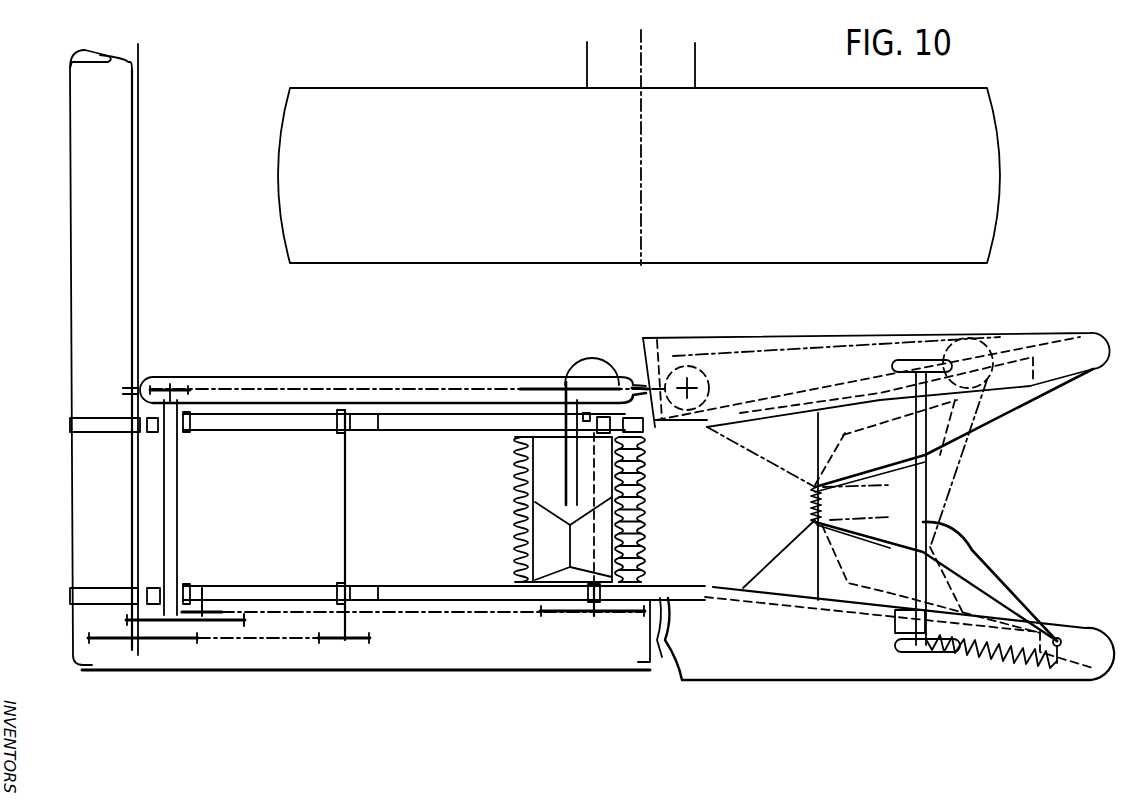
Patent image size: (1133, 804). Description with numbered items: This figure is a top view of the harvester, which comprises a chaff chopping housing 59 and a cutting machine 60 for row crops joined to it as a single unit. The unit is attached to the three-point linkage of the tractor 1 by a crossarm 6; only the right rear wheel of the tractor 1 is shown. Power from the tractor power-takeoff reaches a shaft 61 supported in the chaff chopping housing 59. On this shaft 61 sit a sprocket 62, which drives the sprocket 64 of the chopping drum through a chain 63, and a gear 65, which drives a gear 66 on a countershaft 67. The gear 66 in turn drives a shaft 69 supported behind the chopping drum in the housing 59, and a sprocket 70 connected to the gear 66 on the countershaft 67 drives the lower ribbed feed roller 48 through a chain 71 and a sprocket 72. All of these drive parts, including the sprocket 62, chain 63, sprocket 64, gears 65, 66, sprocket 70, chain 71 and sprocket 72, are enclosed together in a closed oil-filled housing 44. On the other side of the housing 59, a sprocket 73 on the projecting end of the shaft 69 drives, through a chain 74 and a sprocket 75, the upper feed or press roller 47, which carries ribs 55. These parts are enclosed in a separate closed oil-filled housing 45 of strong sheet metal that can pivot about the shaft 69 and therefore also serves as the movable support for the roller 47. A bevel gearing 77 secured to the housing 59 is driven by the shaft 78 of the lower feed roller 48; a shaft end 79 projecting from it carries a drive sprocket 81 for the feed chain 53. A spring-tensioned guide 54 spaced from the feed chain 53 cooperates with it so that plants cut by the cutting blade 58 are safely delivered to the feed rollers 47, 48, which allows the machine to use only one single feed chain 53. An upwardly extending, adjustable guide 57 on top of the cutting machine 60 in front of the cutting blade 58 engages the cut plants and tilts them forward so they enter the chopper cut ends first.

The tractor 1 is at (590, 55).
The crossarm 6 is at (72, 340).
The shaft 61 is at (141, 342).
The sprocket 73 is at (180, 388).
The chain 74 is at (363, 389).
The housing 45 is at (460, 380).
The bevel gearing 77 is at (568, 372).
The sprocket 75 is at (596, 386).
The shaft end 79 is at (648, 345).
The drive sprocket 81 is at (687, 386).
The cutting machine 60 is at (838, 336).
The shaft 69 is at (172, 472).
The chaff chopping housing 59 is at (307, 588).
The upper feed or press roller 47 is at (548, 467).
The lower ribbed feed roller 48 is at (648, 473).
The ribs 55 is at (518, 520).
The feed chain 53 is at (942, 460).
The cutting blade 58 is at (825, 500).
The guide 54 is at (966, 548).
The countershaft 67 is at (207, 598).
The sprocket 70 is at (215, 610).
The gear 65 is at (105, 620).
The sprocket 62 is at (181, 643).
The gear 66 is at (239, 624).
The chain 63 is at (296, 640).
The sprocket 64 is at (365, 641).
The chain 71 is at (457, 614).
The sprocket 72 is at (576, 614).
The shaft 78 is at (598, 601).
The oil-filled housing 44 is at (663, 660).
The guide 57 is at (930, 652).